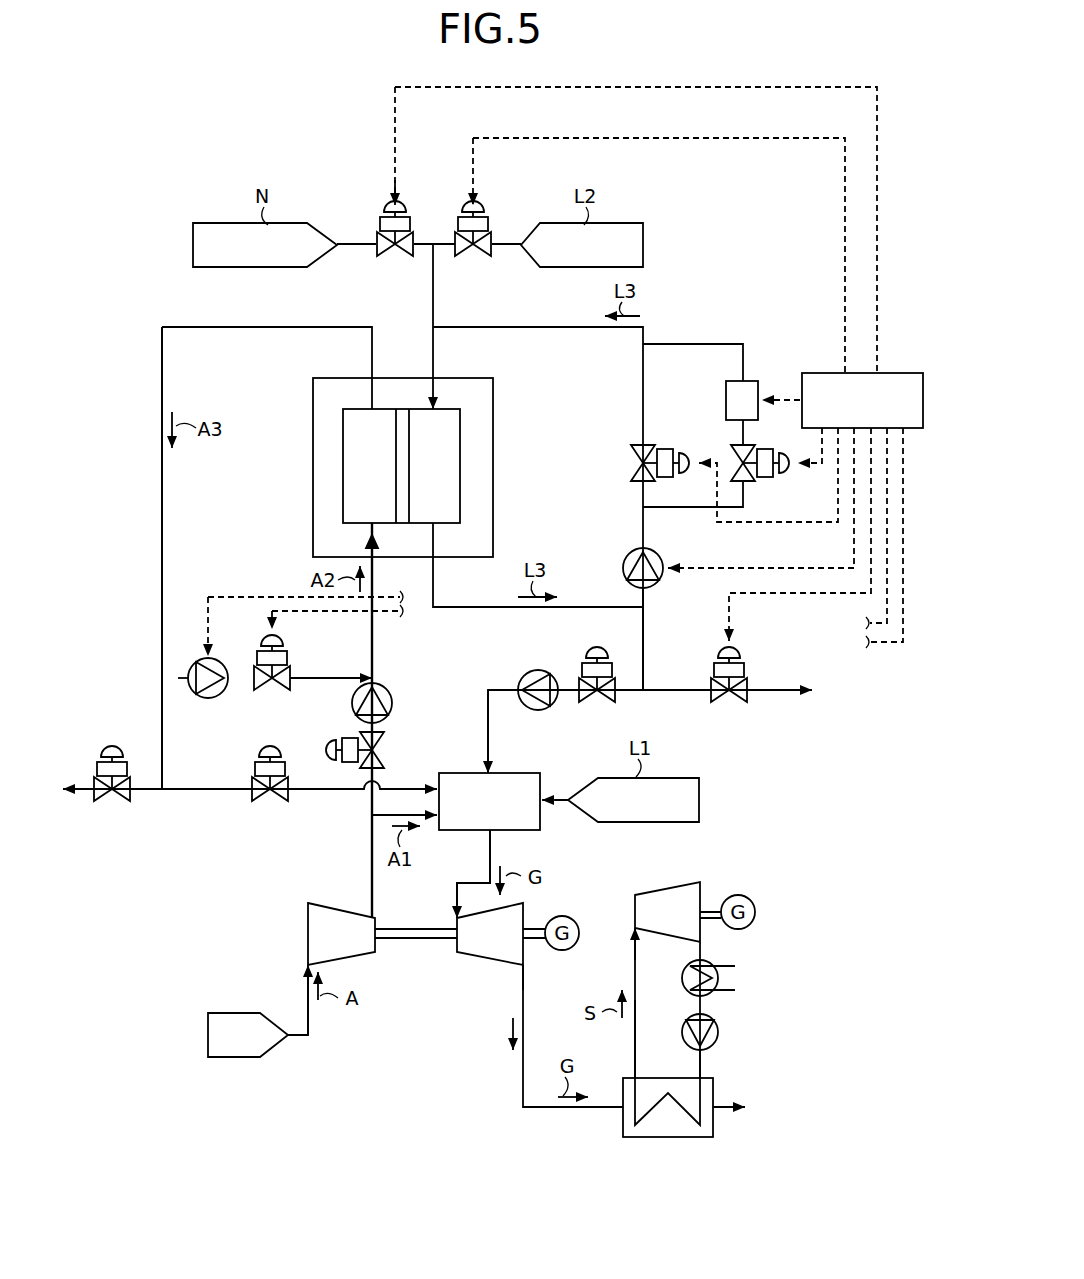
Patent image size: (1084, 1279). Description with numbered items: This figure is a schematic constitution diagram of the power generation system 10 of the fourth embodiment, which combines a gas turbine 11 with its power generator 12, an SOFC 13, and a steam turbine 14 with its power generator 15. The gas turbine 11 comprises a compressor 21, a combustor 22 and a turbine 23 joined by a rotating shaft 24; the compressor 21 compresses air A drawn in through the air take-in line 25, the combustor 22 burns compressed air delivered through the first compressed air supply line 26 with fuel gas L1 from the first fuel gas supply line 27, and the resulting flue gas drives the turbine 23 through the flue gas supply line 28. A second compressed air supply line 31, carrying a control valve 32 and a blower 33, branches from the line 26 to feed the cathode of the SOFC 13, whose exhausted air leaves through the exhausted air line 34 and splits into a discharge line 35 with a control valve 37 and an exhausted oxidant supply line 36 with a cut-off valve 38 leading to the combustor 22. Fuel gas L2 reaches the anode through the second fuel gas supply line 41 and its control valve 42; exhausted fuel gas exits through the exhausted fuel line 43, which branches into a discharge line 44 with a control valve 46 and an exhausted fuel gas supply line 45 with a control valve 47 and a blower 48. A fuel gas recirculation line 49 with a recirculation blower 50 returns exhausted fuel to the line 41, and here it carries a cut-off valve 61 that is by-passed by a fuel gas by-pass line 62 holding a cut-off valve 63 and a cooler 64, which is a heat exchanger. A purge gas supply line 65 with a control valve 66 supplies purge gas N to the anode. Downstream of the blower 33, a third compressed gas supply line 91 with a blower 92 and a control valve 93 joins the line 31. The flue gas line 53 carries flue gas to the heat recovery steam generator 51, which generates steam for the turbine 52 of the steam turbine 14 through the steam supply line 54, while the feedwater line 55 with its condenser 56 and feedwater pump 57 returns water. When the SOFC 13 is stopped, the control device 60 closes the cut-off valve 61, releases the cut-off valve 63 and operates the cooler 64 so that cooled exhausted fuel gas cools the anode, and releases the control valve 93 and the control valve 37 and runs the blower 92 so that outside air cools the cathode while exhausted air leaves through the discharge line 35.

The power generation system 10 is at (722, 303).
The gas turbine 11 is at (538, 900).
The power generator 12 is at (562, 952).
The SOFC 13 is at (497, 398).
The steam turbine 14 is at (712, 866).
The power generator 15 is at (757, 910).
The compressor 21 is at (306, 932).
The combustor 22 is at (518, 772).
The turbine 23 is at (488, 967).
The rotating shaft 24 is at (414, 942).
The air take-in line 25 is at (306, 984).
The first compressed air supply line 26 is at (408, 813).
The first fuel gas supply line 27 is at (556, 797).
The flue gas supply line 28 is at (472, 882).
The second compressed air supply line 31 is at (378, 660).
The control valve 32 is at (330, 740).
The blower 33 is at (392, 704).
The exhausted air line 34 is at (160, 664).
The discharge line 35 is at (150, 793).
The exhausted oxidant supply line 36 is at (208, 793).
The control valve 37 is at (112, 742).
The cut-off valve 38 is at (269, 742).
The second fuel gas supply line 41 is at (431, 273).
The control valve 42 is at (468, 210).
The exhausted fuel line 43 is at (602, 606).
The discharge line 44 is at (776, 689).
The exhausted fuel gas supply line 45 is at (494, 689).
The control valve 46 is at (737, 648).
The control valve 47 is at (597, 650).
The blower 48 is at (534, 670).
The fuel gas recirculation line 49 is at (648, 530).
The recirculation blower 50 is at (658, 582).
The heat recovery steam generator 51 is at (665, 1138).
The turbine 52 is at (633, 910).
The flue gas line 53 is at (572, 1110).
The steam supply line 54 is at (633, 1045).
The feedwater line 55 is at (703, 1062).
The condenser 56 is at (707, 962).
The feedwater pump 57 is at (720, 1032).
The control device 60 is at (808, 372).
The cut-off valve 61 is at (684, 458).
The fuel gas by-pass line 62 is at (741, 360).
The cut-off valve 63 is at (798, 478).
The cooler 64 is at (724, 392).
The purge gas supply line 65 is at (358, 244).
The control valve 66 is at (390, 210).
The third compressed gas supply line 91 is at (316, 676).
The blower 92 is at (212, 698).
The control valve 93 is at (265, 640).
The purge gas N is at (264, 245).
The fuel gas L1 is at (633, 800).
The fuel gas L2 is at (582, 245).
The air A is at (248, 1035).